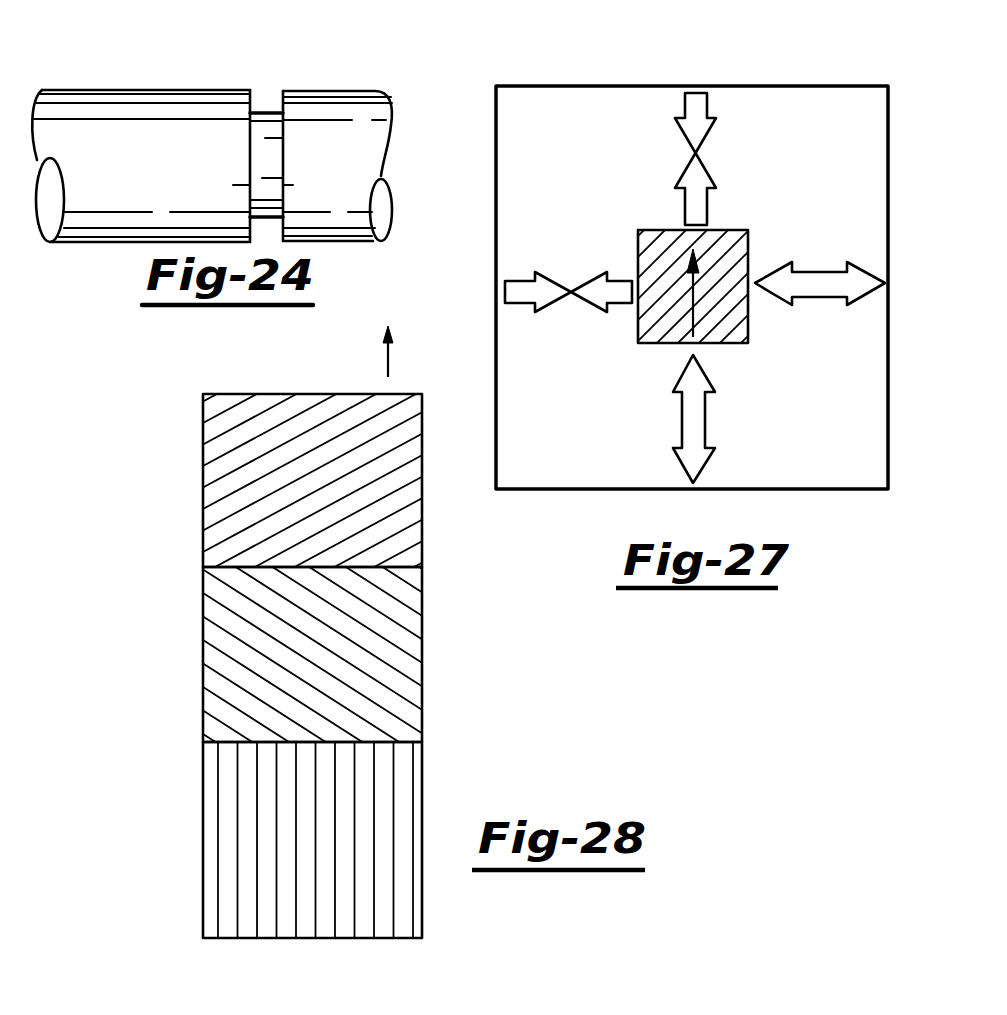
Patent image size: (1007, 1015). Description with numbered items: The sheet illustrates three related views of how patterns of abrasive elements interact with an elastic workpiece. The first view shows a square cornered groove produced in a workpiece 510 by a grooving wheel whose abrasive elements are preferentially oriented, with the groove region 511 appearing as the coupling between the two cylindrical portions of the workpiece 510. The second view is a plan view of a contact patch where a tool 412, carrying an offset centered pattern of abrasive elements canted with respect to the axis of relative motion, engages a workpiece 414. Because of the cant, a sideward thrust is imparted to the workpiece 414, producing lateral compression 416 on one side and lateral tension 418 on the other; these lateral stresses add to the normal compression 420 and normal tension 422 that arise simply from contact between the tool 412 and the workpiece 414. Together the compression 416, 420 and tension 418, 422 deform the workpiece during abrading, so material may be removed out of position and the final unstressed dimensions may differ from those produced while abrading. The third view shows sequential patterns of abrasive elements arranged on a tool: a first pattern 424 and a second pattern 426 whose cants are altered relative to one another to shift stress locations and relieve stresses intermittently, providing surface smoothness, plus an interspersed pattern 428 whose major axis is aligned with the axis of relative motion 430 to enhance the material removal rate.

In FIG. 24, the workpiece 510 is at (365, 90).
In FIG. 24, the coupling joint 511 is at (259, 112).
In FIG. 27, the tool 412 is at (670, 311).
In FIG. 27, the workpiece 414 is at (594, 171).
In FIG. 27, the compression 416 is at (552, 291).
In FIG. 27, the tension 418 is at (818, 282).
In FIG. 27, the normal compression 420 is at (698, 135).
In FIG. 27, the normal tension 422 is at (695, 413).
In FIG. 28, the first pattern 424 is at (203, 510).
In FIG. 28, the second pattern 426 is at (203, 624).
In FIG. 28, the interspersed pattern 428 is at (203, 838).
In FIG. 28, the axis of relative motion 430 is at (360, 348).